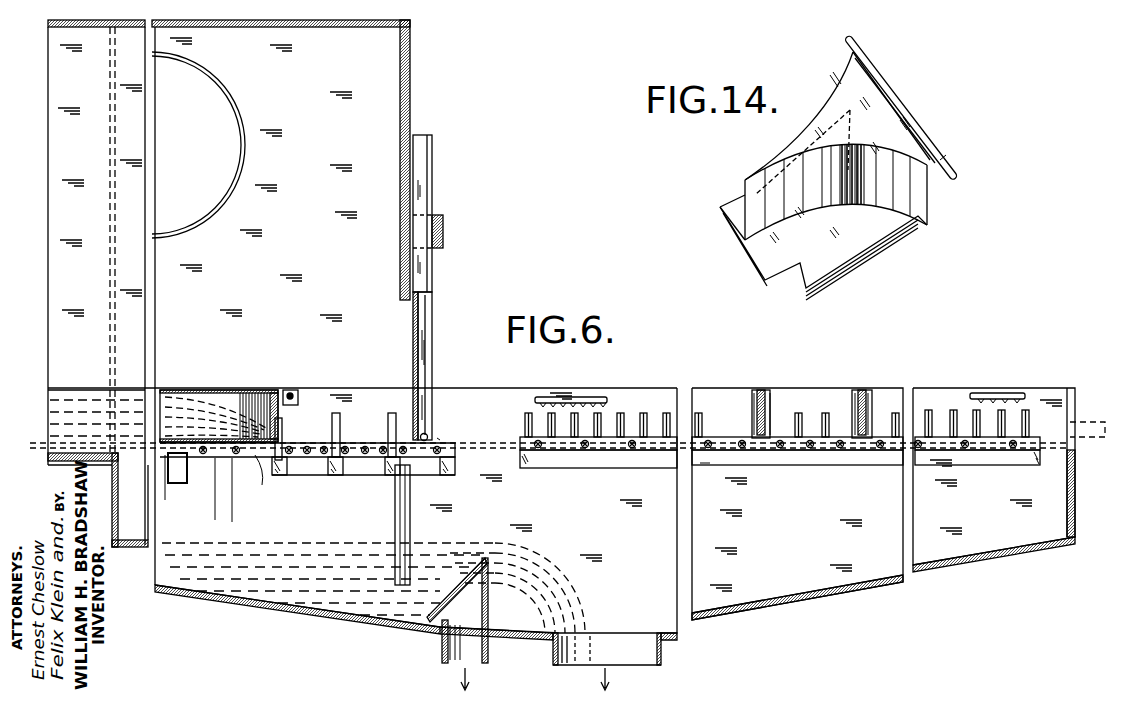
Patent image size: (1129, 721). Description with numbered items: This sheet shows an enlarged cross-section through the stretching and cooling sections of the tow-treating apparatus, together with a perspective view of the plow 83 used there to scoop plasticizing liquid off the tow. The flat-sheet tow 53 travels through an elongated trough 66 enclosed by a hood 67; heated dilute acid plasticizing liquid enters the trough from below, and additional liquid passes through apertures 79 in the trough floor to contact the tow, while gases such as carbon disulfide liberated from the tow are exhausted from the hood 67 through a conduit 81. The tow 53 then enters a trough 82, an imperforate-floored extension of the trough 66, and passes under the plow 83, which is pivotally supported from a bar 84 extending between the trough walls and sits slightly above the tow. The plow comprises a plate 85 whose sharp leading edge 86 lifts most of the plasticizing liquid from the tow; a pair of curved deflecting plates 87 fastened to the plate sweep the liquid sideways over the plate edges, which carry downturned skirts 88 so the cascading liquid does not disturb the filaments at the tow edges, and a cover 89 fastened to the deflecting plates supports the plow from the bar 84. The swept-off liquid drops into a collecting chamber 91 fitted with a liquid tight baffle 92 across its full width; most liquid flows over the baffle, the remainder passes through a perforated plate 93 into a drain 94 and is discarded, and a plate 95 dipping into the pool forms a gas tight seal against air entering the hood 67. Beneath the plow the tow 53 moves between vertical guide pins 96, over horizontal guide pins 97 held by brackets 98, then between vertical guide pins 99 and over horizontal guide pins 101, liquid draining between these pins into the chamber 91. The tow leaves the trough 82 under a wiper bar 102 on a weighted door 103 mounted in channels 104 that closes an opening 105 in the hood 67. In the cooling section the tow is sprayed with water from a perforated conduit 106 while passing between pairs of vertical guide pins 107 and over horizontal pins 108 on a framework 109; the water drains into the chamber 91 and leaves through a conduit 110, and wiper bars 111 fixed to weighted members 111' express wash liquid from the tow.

In FIG. 6, the tow 53 is at (38, 443).
In FIG. 6, the elongated trough 66 is at (80, 390).
In FIG. 6, the hood 67 is at (412, 87).
In FIG. 6, the apertures 79 is at (97, 462).
In FIG. 6, the conduit 81 is at (240, 130).
In FIG. 6, the trough 82 is at (135, 395).
In FIG. 6, the plow 83 is at (242, 389).
In FIG. 14, the plow 83 is at (920, 93).
In FIG. 6, the bar 84 is at (300, 392).
In FIG. 14, the bar 84 is at (952, 172).
In FIG. 6, the plate 85 is at (205, 454).
In FIG. 14, the plate 85 is at (785, 258).
In FIG. 6, the sharp leading edge 86 is at (165, 460).
In FIG. 14, the sharp leading edge 86 is at (755, 263).
In FIG. 6, the curved deflecting plates 87 is at (218, 395).
In FIG. 14, the curved deflecting plates 87 is at (778, 155).
In FIG. 6, the downturned skirts 88 is at (282, 441).
In FIG. 14, the downturned skirts 88 is at (847, 262).
In FIG. 6, the cover 89 is at (275, 392).
In FIG. 14, the cover 89 is at (878, 85).
In FIG. 6, the collecting chamber 91 is at (350, 617).
In FIG. 6, the liquid tight baffle 92 is at (488, 607).
In FIG. 6, the perforated plate 93 is at (488, 590).
In FIG. 6, the drain 94 is at (442, 651).
In FIG. 6, the plate 95 is at (395, 527).
In FIG. 6, the vertical guide pins 96 is at (180, 455).
In FIG. 6, the horizontal guide pins 97 is at (238, 455).
In FIG. 6, the brackets 98 is at (263, 460).
In FIG. 6, the vertical guide pins 99 is at (388, 425).
In FIG. 6, the horizontal guide pins 101 is at (386, 458).
In FIG. 6, the wiper bar 102 is at (437, 438).
In FIG. 6, the door 103 is at (418, 363).
In FIG. 6, the channels 104 is at (433, 168).
In FIG. 6, the opening 105 is at (409, 302).
In FIG. 6, the perforated conduit 106 is at (572, 396).
In FIG. 6, the vertical guide pins 107 is at (666, 412).
In FIG. 6, the horizontal pins 108 is at (583, 452).
In FIG. 6, the framework 109 is at (733, 465).
In FIG. 6, the conduit 110 is at (560, 662).
In FIG. 6, the wiper bars 111 is at (762, 438).
In FIG. 6, the weighted members 111' is at (841, 392).